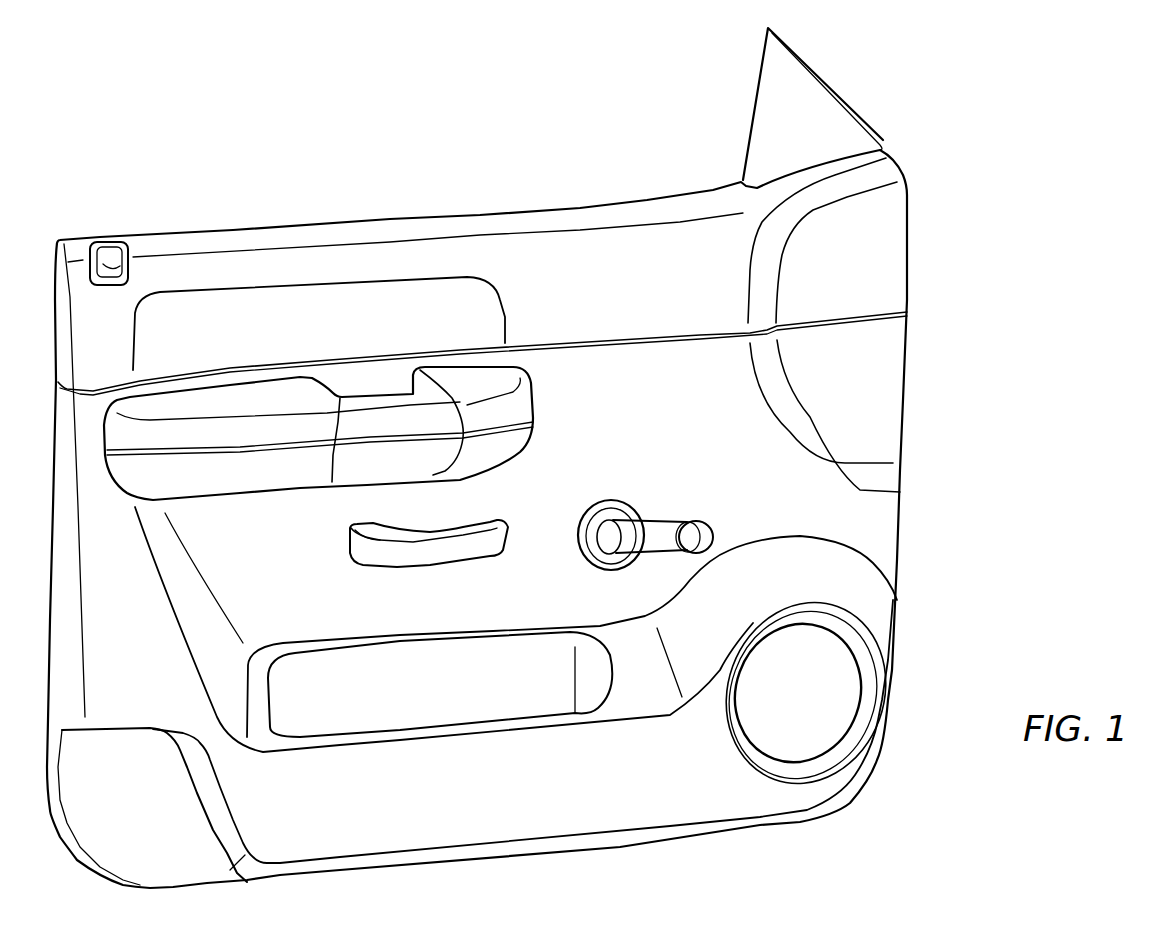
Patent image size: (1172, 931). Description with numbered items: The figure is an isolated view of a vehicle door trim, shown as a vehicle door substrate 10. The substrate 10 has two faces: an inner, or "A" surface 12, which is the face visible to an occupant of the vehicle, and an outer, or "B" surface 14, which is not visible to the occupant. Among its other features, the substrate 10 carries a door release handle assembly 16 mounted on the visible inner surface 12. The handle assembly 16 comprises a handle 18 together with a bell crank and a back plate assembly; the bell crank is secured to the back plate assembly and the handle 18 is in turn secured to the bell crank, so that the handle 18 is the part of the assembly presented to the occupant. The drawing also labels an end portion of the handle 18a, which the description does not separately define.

The vehicle door substrate 10 is at (99, 144).
The inner "A" surface 12 is at (616, 304).
The outer "B" surface 14 is at (643, 200).
The door release handle assembly 16 is at (406, 546).
The handle 18 is at (406, 529).
The handle end portion 18a is at (347, 542).